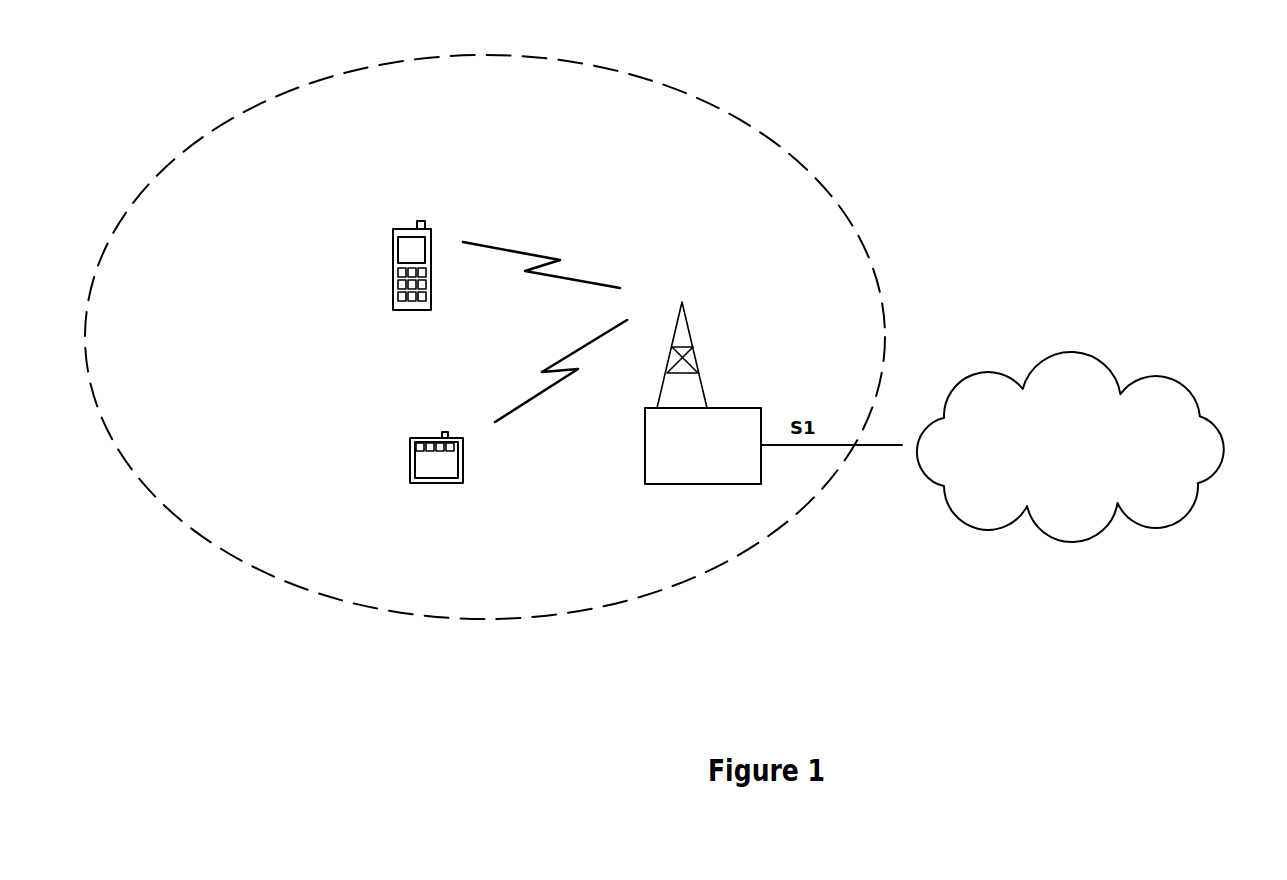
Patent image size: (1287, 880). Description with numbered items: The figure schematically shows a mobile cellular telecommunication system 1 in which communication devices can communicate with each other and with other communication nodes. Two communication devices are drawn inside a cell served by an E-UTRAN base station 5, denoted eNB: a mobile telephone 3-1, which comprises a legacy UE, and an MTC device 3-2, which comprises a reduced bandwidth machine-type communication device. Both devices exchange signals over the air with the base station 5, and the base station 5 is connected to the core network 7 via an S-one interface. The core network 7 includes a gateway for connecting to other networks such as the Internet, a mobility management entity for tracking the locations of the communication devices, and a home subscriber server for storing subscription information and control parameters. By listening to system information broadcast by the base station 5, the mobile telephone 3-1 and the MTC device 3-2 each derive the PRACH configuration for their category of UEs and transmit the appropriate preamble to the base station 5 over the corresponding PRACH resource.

The mobile telecommunication system 1 is at (950, 100).
The mobile telephone 3-1 is at (397, 230).
The MTC device 3-2 is at (420, 437).
The E-UTRAN base station 5 is at (730, 408).
The core network 7 is at (1180, 383).